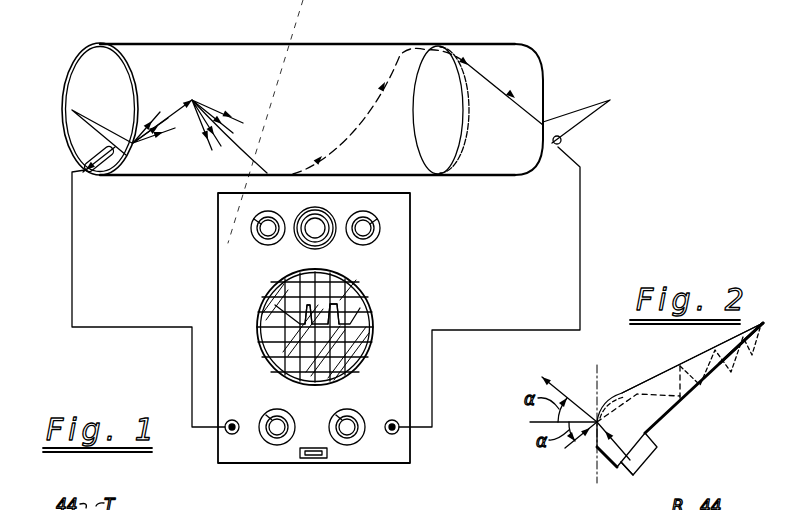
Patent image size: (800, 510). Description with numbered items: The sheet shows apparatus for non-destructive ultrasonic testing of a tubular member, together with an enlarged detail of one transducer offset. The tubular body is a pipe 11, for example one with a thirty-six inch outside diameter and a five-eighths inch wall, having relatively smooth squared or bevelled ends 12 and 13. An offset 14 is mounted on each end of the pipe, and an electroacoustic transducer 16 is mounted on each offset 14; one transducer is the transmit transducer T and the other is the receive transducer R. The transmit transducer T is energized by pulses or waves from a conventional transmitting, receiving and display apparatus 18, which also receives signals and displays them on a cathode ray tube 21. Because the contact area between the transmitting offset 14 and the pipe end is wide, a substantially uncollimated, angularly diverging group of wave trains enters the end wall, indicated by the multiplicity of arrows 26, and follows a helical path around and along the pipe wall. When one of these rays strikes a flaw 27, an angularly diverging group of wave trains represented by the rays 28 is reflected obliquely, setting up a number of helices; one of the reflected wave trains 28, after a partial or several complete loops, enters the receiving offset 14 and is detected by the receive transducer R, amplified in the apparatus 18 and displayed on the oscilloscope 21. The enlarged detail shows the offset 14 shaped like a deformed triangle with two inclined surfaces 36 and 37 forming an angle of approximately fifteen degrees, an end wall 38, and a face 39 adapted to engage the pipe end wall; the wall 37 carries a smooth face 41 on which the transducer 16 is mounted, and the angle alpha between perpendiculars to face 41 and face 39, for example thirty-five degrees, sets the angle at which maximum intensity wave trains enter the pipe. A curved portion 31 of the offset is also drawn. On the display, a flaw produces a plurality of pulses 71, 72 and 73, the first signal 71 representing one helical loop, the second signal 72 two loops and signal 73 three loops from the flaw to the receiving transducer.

In FIG. 1, the pipe 11 is at (472, 50).
In FIG. 1, the smooth end 12 is at (68, 78).
In FIG. 1, the smooth end 13 is at (547, 98).
In FIG. 1, the offset 14 is at (93, 124).
In FIG. 2, the offset 14 is at (693, 399).
In FIG. 1, the electroacoustic transducer 16 is at (115, 173).
In FIG. 2, the electroacoustic transducer 16 is at (653, 452).
In FIG. 1, the transmitting, receiving and display apparatus 18 is at (418, 303).
In FIG. 1, the cathode ray tube 21 is at (364, 369).
In FIG. 1, the arrows 26 is at (163, 135).
In FIG. 1, the flaw 27 is at (196, 98).
In FIG. 1, the rays 28 is at (235, 120).
In FIG. 2, the curved wedge surface 31 is at (637, 392).
In FIG. 2, the inclined surface 36 is at (703, 357).
In FIG. 2, the inclined surface 37 is at (735, 352).
In FIG. 2, the end wall 38 is at (606, 465).
In FIG. 2, the face 39 is at (590, 440).
In FIG. 2, the smooth face 41 is at (631, 473).
In FIG. 1, the first pulse 71 is at (274, 304).
In FIG. 1, the second pulse 72 is at (307, 304).
In FIG. 1, the third pulse 73 is at (340, 302).
In FIG. 1, the transmit transducer T is at (88, 165).
In FIG. 1, the receive transducer R is at (562, 138).